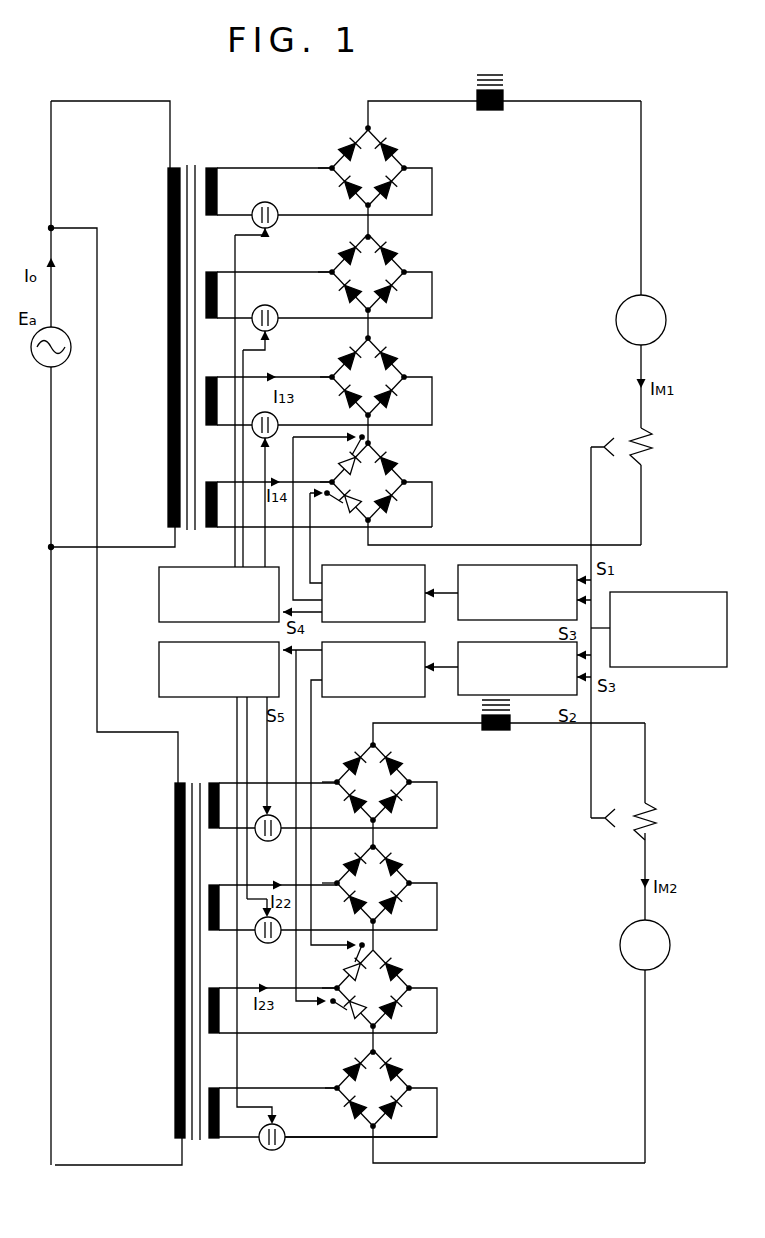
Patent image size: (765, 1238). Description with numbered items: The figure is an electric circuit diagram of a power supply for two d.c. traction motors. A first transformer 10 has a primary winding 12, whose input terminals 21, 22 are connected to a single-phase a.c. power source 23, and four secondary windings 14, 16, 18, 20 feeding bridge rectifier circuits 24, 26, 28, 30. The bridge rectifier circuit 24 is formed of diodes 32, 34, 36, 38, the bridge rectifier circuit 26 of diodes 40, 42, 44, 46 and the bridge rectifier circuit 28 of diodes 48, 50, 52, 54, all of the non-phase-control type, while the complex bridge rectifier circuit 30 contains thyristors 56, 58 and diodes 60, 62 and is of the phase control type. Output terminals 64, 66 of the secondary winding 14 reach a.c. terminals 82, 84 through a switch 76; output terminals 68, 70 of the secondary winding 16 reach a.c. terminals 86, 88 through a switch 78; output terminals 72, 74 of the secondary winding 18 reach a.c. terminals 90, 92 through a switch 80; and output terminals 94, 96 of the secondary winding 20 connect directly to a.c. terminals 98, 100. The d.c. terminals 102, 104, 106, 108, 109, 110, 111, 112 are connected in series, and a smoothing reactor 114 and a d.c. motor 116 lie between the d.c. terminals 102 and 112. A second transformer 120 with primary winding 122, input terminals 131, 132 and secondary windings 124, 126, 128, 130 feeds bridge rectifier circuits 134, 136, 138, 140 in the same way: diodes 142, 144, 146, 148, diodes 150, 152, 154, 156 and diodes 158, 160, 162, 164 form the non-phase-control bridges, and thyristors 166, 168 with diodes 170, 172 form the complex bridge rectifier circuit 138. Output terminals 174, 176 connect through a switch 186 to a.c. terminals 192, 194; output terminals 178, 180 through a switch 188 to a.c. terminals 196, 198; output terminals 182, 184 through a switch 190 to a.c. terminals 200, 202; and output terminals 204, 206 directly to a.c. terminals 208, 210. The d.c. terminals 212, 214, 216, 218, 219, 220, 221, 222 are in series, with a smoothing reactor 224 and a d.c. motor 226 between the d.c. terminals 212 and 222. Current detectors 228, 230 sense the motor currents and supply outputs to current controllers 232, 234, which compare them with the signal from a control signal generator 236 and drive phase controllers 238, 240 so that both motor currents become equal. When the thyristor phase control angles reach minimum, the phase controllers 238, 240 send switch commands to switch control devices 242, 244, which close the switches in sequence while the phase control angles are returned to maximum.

The first transformer 10 is at (199, 161).
The primary winding 12 is at (167, 212).
The secondary winding 14 is at (210, 218).
The secondary winding 16 is at (208, 320).
The secondary winding 18 is at (207, 426).
The secondary winding 20 is at (206, 530).
The input terminal 21 is at (167, 165).
The input terminal 22 is at (172, 540).
The single-phase a.c. power source 23 is at (46, 366).
The bridge rectifier circuit 24 is at (369, 167).
The bridge rectifier circuit 26 is at (367, 272).
The bridge rectifier circuit 28 is at (356, 357).
The complex bridge rectifier circuit 30 is at (371, 511).
The diode 32 is at (350, 150).
The diode 34 is at (351, 183).
The diode 36 is at (384, 151).
The diode 38 is at (388, 182).
The diode 40 is at (346, 256).
The diode 42 is at (351, 291).
The diode 44 is at (391, 259).
The diode 46 is at (392, 291).
The diode 48 is at (342, 353).
The diode 50 is at (351, 396).
The diode 52 is at (392, 363).
The diode 54 is at (392, 395).
The thyristor 56 is at (349, 469).
The thyristor 58 is at (351, 508).
The diode 60 is at (392, 466).
The diode 62 is at (392, 501).
The output terminal 64 is at (237, 168).
The output terminal 66 is at (240, 215).
The output terminal 68 is at (228, 272).
The output terminal 70 is at (236, 318).
The output terminal 72 is at (228, 377).
The output terminal 74 is at (226, 422).
The switch 76 is at (276, 224).
The switch 78 is at (276, 326).
The switch 80 is at (272, 438).
The a.c. terminal 82 is at (330, 168).
The a.c. terminal 84 is at (406, 168).
The AC input terminal 86 is at (329, 275).
The AC input terminal 88 is at (410, 273).
The a.c. terminal 90 is at (331, 376).
The a.c. terminal 92 is at (412, 377).
The output terminal 94 is at (228, 482).
The output terminal 96 is at (228, 527).
The a.c. terminal 98 is at (331, 482).
The a.c. terminal 100 is at (410, 482).
The d.c. terminal 102 is at (366, 127).
The d.c. terminal 104 is at (372, 214).
The d.c. terminal 106 is at (366, 238).
The d.c. terminal 108 is at (372, 320).
The d.c. terminal 109 is at (365, 340).
The d.c. terminal 110 is at (372, 437).
The d.c. terminal 111 is at (374, 443).
The d.c. terminal 112 is at (372, 526).
The smoothing reactor 114 is at (494, 110).
The d.c. motor 116 is at (660, 306).
The second transformer 120 is at (208, 773).
The primary winding 122 is at (174, 838).
The secondary winding 124 is at (213, 833).
The secondary winding 126 is at (213, 933).
The secondary winding 128 is at (213, 1036).
The secondary winding 130 is at (215, 1141).
The input terminal 131 is at (176, 770).
The input terminal 132 is at (180, 1150).
The bridge rectifier circuit 134 is at (375, 775).
The bridge rectifier circuit 136 is at (375, 882).
The complex bridge rectifier circuit 138 is at (367, 841).
The bridge rectifier circuit 140 is at (370, 1088).
The diode 142 is at (355, 761).
The diode 144 is at (353, 801).
The diode 146 is at (391, 763).
The diode 148 is at (394, 797).
The diode 150 is at (354, 863).
The diode 152 is at (351, 904).
The diode 154 is at (394, 866).
The diode 156 is at (395, 900).
The diode 158 is at (355, 1069).
The diode 160 is at (350, 1106).
The diode 162 is at (392, 1073).
The diode 164 is at (395, 1105).
The thyristor 166 is at (355, 969).
The thyristor 168 is at (351, 1010).
The diode 170 is at (393, 969).
The diode 172 is at (395, 1001).
The output terminal 174 is at (230, 782).
The output terminal 176 is at (268, 842).
The output terminal 178 is at (230, 885).
The output terminal 180 is at (266, 944).
The output terminal 182 is at (230, 1088).
The output terminal 184 is at (269, 1151).
The switch 186 is at (274, 892).
The switch 188 is at (282, 955).
The switch 190 is at (286, 1145).
The a.c. terminal 192 is at (333, 779).
The a.c. terminal 194 is at (410, 782).
The a.c. terminal 196 is at (334, 881).
The a.c. terminal 198 is at (412, 883).
The a.c. terminal 200 is at (335, 1087).
The a.c. terminal 202 is at (414, 1090).
The output terminal 204 is at (238, 988).
The output terminal 206 is at (232, 1033).
The a.c. terminal 208 is at (340, 996).
The a.c. terminal 210 is at (414, 990).
The d.c. terminal 212 is at (371, 742).
The d.c. terminal 214 is at (378, 822).
The d.c. terminal 216 is at (377, 848).
The d.c. terminal 218 is at (378, 926).
The d.c. terminal 219 is at (375, 958).
The d.c. terminal 220 is at (379, 1029).
The d.c. terminal 221 is at (377, 1056).
The d.c. terminal 222 is at (370, 1130).
The smoothing reactor 224 is at (493, 731).
The d.c. motor 226 is at (671, 946).
The current detector 228 is at (655, 447).
The current detector 230 is at (659, 822).
The current controller 232 is at (503, 565).
The current controller 234 is at (460, 696).
The control signal generator 236 is at (700, 592).
The phase controller 238 is at (345, 565).
The phase controller 240 is at (345, 697).
The switch control device 242 is at (158, 600).
The switch control device 244 is at (158, 675).